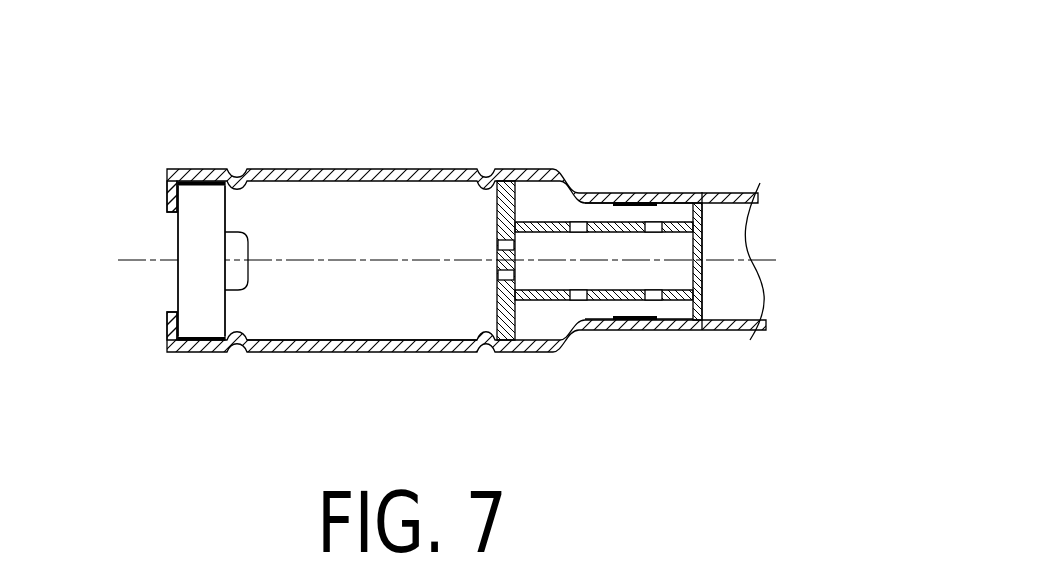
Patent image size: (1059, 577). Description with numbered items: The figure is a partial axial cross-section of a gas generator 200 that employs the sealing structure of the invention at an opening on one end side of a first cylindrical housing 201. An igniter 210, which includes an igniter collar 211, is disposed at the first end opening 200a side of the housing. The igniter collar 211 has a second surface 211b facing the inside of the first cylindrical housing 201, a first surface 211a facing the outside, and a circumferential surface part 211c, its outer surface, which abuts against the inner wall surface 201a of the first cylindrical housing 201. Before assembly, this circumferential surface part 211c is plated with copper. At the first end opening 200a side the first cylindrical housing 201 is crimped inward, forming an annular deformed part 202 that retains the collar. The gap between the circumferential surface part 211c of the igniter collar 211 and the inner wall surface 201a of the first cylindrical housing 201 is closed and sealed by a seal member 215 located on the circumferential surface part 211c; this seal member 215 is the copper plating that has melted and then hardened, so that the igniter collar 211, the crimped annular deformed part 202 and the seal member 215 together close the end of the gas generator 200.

The gas generator 200 is at (407, 241).
The first end opening 200a is at (168, 302).
The first cylindrical housing 201 is at (362, 168).
The inner wall surface 201a is at (360, 342).
The annular deformed part 202 is at (170, 204).
The igniter 210 is at (230, 293).
The igniter collar 211 is at (185, 237).
The first surface 211a is at (172, 277).
The second surface 211b is at (226, 213).
The circumferential surface part 211c is at (205, 322).
The seal member 215 is at (201, 181).